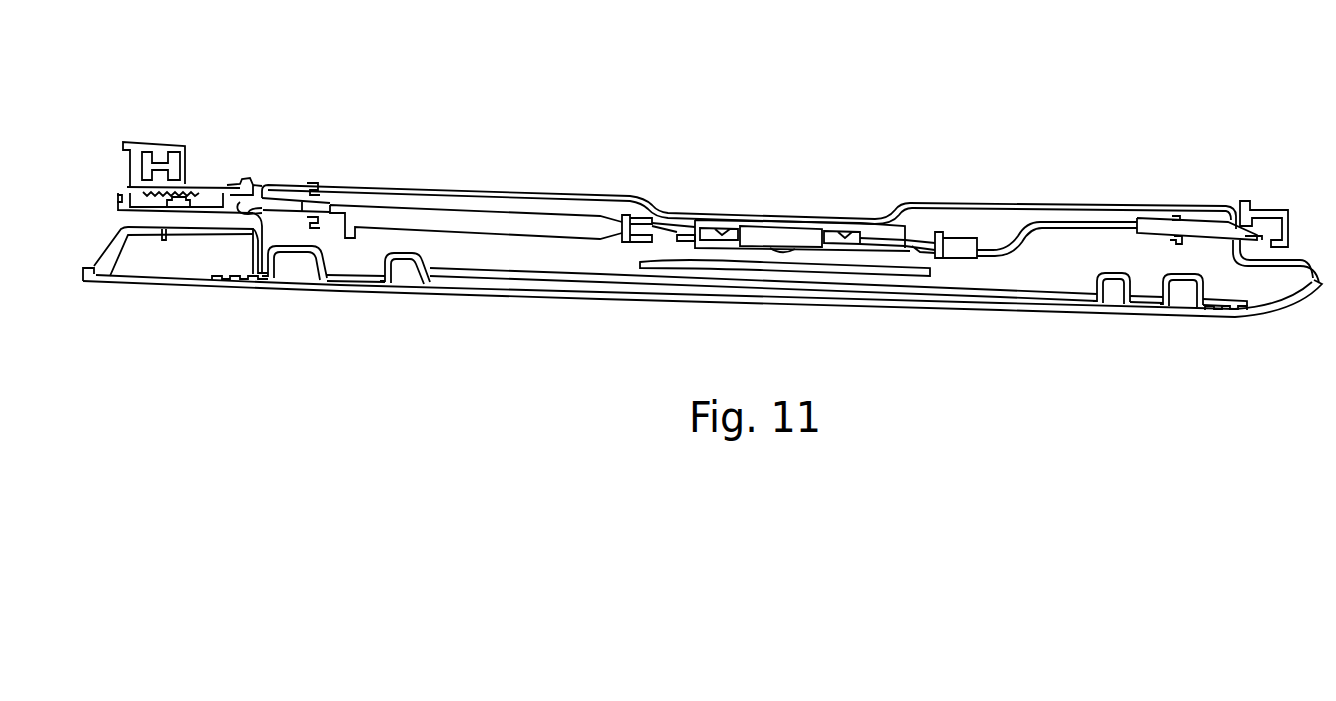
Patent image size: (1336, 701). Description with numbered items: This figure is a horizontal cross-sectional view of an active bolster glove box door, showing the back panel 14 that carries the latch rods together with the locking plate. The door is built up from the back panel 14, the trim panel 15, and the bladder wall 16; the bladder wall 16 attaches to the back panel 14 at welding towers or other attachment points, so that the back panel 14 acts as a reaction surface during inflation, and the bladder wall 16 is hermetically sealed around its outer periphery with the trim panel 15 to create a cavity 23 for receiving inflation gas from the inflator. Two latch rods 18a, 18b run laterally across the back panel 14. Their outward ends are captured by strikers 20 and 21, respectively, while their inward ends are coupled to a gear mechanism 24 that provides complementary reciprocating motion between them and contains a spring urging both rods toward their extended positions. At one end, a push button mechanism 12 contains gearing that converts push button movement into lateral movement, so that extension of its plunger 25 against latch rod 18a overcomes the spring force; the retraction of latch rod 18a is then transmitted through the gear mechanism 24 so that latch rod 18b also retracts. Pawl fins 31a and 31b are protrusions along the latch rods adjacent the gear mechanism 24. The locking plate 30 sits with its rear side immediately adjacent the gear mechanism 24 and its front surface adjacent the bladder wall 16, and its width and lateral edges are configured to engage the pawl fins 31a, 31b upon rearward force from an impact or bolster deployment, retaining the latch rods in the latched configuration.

The push button mechanism 12 is at (147, 136).
The plunger 25 is at (223, 198).
The striker 20 is at (253, 183).
The latch rod 18a is at (253, 235).
The back panel 14 is at (510, 190).
The pawl fin 31a is at (630, 220).
The gear mechanism 24 is at (782, 237).
The pawl fin 31b is at (940, 238).
The latch rod 18b is at (1208, 228).
The striker 21 is at (1268, 208).
The trim panel 15 is at (454, 295).
The bladder wall 16 is at (650, 281).
The locking plate 30 is at (771, 263).
The cavity 23 is at (848, 296).